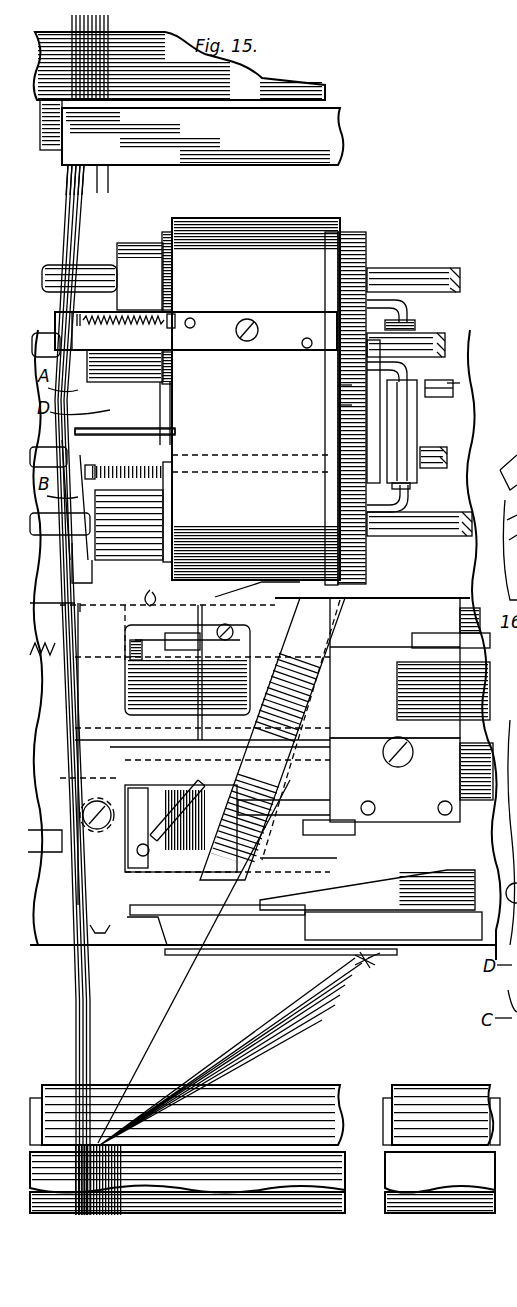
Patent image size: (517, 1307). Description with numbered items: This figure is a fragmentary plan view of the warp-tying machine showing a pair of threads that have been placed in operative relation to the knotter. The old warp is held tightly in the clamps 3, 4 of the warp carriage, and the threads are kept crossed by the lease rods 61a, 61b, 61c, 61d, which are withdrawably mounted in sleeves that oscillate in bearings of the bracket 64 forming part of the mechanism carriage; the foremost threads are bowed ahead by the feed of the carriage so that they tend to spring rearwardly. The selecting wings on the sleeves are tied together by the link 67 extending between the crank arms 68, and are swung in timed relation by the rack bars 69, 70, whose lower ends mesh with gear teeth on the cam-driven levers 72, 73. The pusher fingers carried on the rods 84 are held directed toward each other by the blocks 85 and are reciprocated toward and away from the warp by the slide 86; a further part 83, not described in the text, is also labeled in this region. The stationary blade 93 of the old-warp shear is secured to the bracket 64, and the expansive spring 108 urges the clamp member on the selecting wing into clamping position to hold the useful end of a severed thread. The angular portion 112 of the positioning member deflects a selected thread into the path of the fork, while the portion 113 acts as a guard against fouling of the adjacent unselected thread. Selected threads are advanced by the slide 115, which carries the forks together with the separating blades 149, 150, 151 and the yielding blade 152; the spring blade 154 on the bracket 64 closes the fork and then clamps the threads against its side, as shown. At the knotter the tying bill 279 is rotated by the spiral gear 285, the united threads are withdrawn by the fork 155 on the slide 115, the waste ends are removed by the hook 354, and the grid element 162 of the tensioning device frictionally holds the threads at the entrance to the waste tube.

The clamp 3 is at (327, 160).
The clamp 4 is at (440, 1095).
The bracket 64 is at (262, 235).
The link 67 is at (331, 508).
The crank arm 68 is at (345, 372).
The rack bar 69 is at (340, 388).
The rack bar 70 is at (345, 405).
The lever 72 is at (452, 384).
The lever 73 is at (466, 404).
The arm 83 is at (512, 1005).
The rod 84 is at (381, 298).
The block 85 is at (408, 433).
The slide 86 is at (432, 386).
The stationary blade 93 is at (178, 450).
The expansive spring 108 is at (150, 490).
The angular portion 112 is at (92, 576).
The guard portion 113 is at (84, 606).
The slide 115 is at (187, 672).
The separating blade 149 is at (320, 660).
The separating blade 150 is at (322, 599).
The separating blade 151 is at (250, 880).
The blade 152 is at (125, 792).
The spring blade 154 is at (155, 583).
The fork 155 is at (246, 950).
The grid element 162 is at (503, 478).
The tying bill 279 is at (236, 800).
The spiral gear 285 is at (300, 800).
The hook 354 is at (378, 662).
The lease rod 61a is at (440, 338).
The lease rod 61b is at (437, 530).
The lease rod 61c is at (440, 270).
The lease rod 61d is at (448, 452).